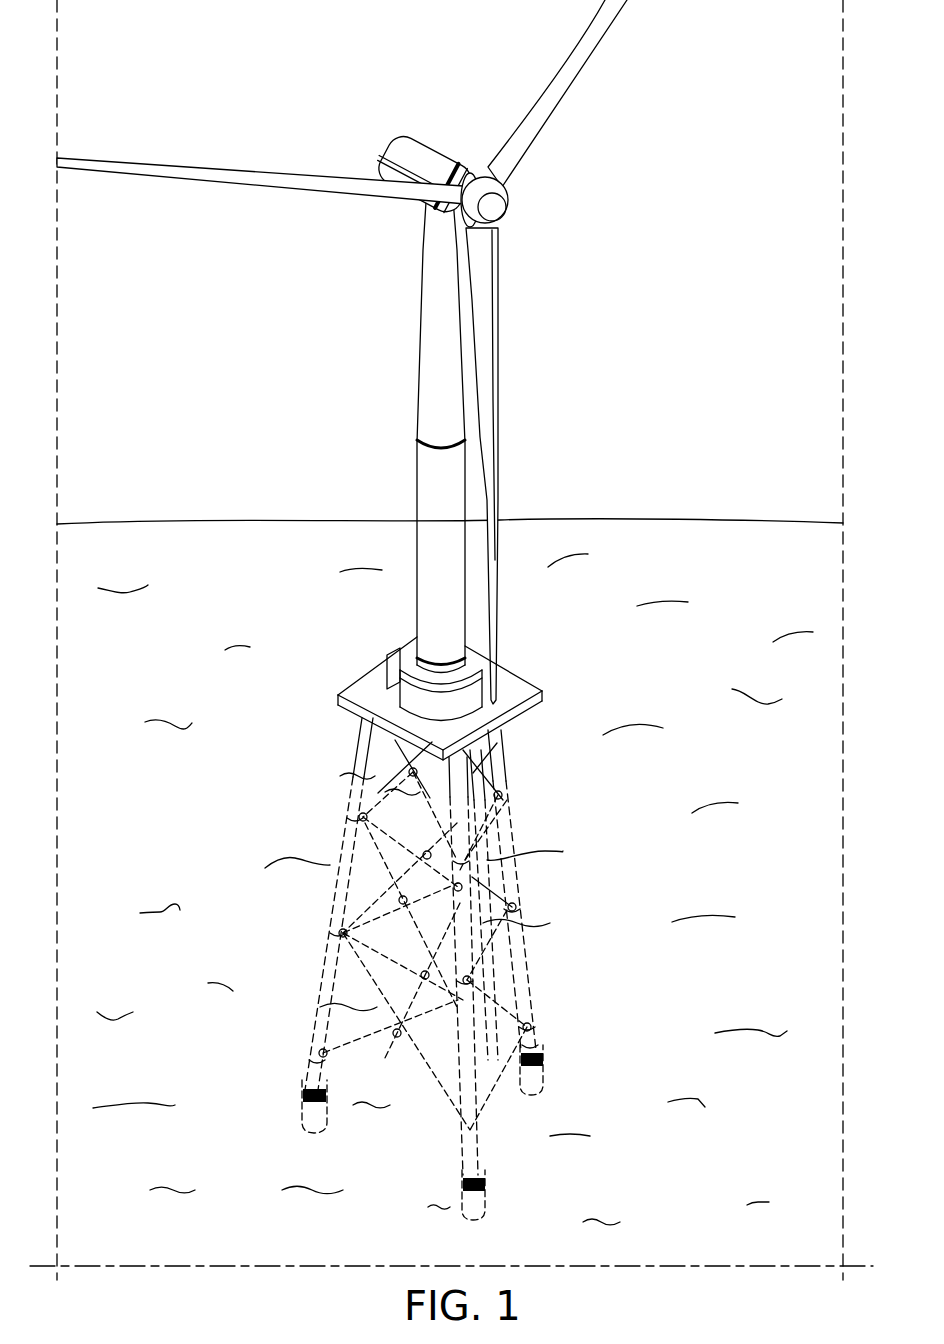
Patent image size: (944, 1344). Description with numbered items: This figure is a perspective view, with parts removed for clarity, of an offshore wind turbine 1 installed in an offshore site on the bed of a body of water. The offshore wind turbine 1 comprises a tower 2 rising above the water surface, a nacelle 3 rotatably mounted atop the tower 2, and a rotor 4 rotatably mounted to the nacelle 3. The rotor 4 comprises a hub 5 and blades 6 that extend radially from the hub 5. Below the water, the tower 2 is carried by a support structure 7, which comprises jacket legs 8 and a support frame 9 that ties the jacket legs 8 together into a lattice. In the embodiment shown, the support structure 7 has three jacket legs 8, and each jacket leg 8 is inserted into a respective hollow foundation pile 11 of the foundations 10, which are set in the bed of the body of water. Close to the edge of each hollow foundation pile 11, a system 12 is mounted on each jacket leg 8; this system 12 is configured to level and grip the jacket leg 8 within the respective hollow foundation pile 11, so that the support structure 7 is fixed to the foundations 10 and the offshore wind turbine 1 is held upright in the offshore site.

The offshore wind turbine 1 is at (300, 422).
The tower 2 is at (427, 363).
The nacelle 3 is at (413, 150).
The rotor 4 is at (603, 192).
The hub 5 is at (497, 207).
The blades 6 is at (217, 172).
The support structure 7 is at (562, 898).
The jacket legs 8 is at (306, 1066).
The support frame 9 is at (358, 840).
The foundations 10 is at (306, 1169).
The hollow foundation piles 11 is at (327, 1113).
The system configured to level and grip each jacket leg 12 is at (280, 1099).